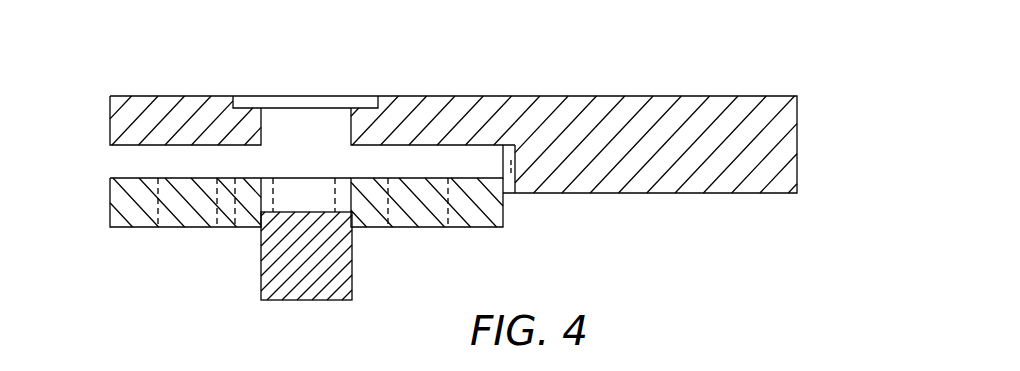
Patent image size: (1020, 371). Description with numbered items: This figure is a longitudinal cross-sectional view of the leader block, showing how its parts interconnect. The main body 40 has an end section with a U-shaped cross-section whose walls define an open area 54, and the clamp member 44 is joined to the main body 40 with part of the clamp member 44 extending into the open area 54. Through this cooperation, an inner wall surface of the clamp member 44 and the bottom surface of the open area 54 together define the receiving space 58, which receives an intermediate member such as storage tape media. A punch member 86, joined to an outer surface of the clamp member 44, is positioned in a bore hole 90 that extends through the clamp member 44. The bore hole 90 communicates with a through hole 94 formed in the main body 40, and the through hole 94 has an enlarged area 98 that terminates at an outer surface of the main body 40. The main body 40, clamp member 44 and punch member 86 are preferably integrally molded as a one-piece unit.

The main body 40 is at (623, 92).
The clamp member 44 is at (135, 215).
The open area 54 is at (450, 155).
The receiving space 58 is at (113, 156).
The punch member 86 is at (262, 300).
The bore hole 90 is at (262, 188).
The through hole 94 is at (264, 116).
The enlarged area 98 is at (321, 96).